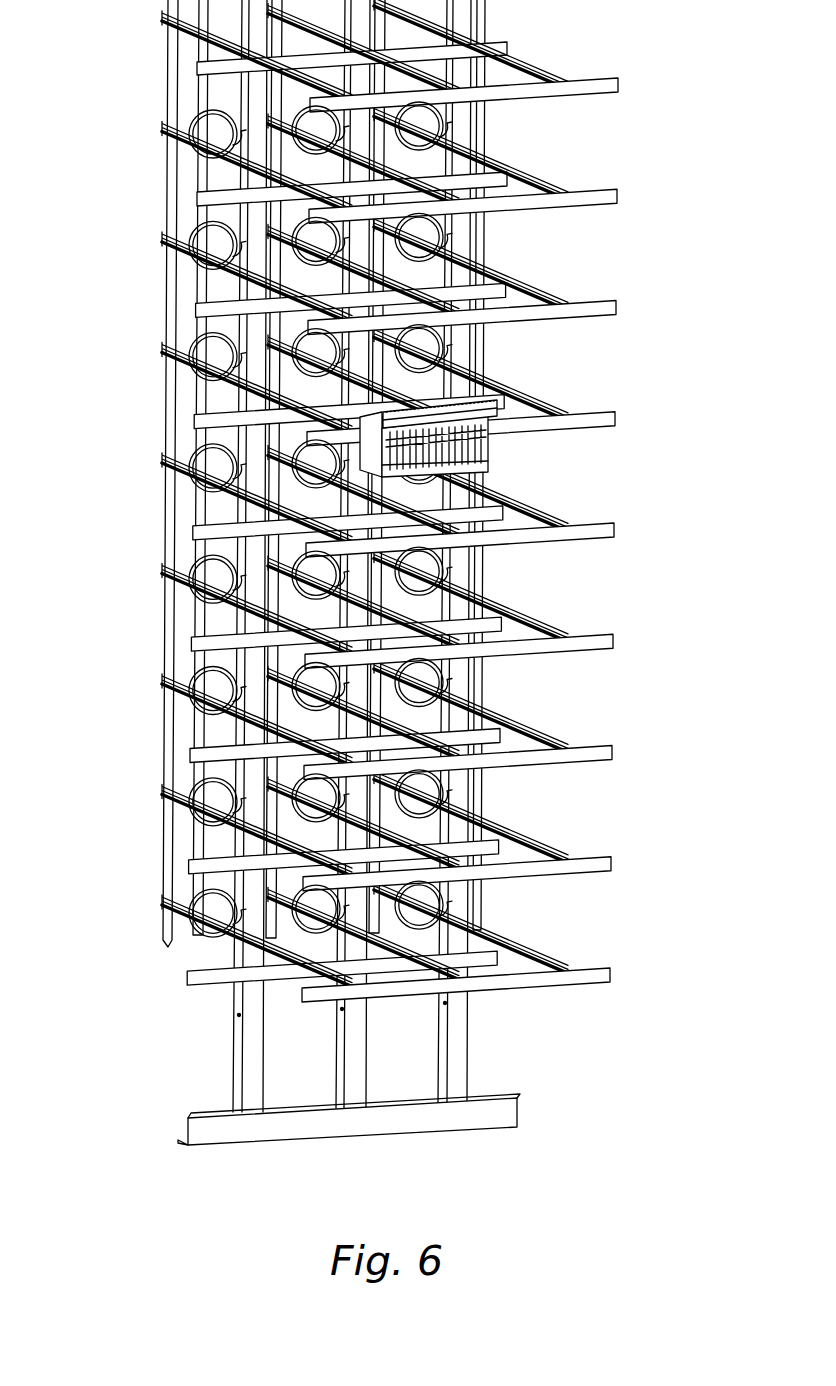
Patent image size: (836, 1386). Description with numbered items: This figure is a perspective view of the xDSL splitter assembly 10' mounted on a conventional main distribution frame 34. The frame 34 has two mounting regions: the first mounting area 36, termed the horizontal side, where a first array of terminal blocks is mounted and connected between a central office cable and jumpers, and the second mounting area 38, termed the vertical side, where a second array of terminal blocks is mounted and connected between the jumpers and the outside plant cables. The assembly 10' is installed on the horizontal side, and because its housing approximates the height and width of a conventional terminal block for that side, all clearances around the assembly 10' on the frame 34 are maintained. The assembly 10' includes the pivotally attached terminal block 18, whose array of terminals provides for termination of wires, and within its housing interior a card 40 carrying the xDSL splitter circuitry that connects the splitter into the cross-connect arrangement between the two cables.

The assembly 10' is at (464, 459).
The terminal block 18 is at (497, 400).
The frame 34 is at (462, 1052).
The first mounting area 36 is at (637, 65).
The second mounting area 38 is at (120, 10).
The card 40 is at (447, 468).